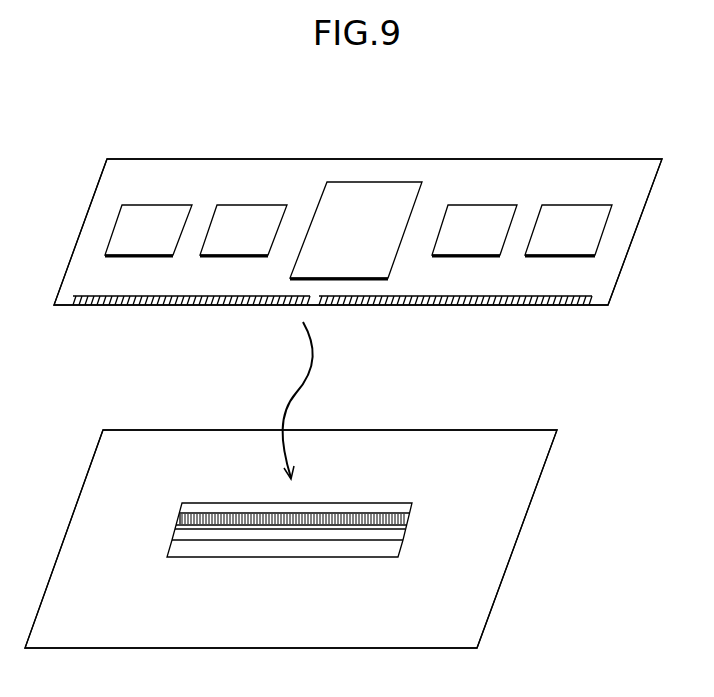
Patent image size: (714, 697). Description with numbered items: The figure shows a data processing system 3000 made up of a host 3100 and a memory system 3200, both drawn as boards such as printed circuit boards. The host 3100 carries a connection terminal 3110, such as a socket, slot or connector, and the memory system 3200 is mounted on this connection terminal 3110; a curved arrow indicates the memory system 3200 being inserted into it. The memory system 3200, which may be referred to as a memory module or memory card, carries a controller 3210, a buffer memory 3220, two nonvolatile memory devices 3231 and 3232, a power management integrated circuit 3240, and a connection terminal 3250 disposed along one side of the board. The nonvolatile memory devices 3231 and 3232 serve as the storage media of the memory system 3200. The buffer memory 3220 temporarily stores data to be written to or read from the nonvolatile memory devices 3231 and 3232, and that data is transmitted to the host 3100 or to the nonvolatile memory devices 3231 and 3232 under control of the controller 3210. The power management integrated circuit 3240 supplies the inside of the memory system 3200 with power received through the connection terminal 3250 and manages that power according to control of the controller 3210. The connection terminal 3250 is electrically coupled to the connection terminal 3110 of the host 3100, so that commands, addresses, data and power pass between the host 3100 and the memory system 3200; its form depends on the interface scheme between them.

The data processing system 3000 is at (208, 125).
The host 3100 is at (291, 539).
The connection terminal 3110 is at (410, 511).
The memory system 3200 is at (358, 232).
The controller 3210 is at (356, 230).
The buffer memory 3220 is at (243, 230).
The nonvolatile memory device 3231 is at (474, 230).
The nonvolatile memory device 3232 is at (568, 230).
The power management integrated circuit 3240 is at (148, 230).
The connection terminal 3250 is at (89, 306).